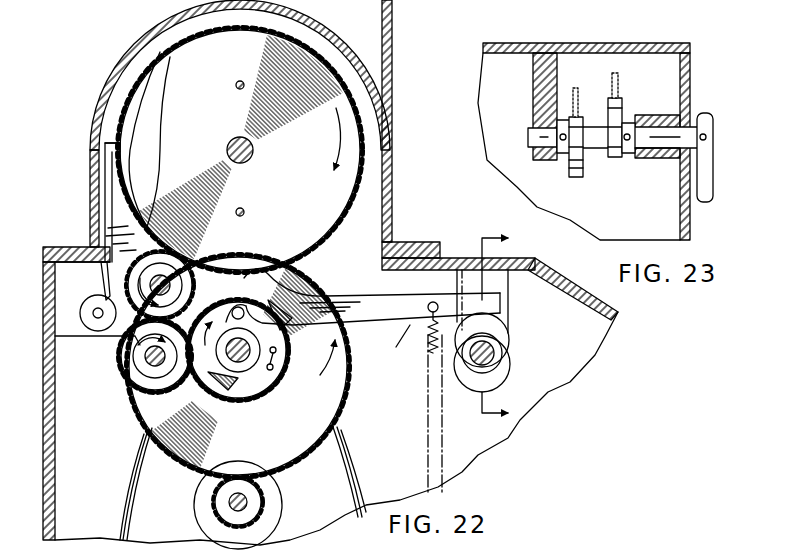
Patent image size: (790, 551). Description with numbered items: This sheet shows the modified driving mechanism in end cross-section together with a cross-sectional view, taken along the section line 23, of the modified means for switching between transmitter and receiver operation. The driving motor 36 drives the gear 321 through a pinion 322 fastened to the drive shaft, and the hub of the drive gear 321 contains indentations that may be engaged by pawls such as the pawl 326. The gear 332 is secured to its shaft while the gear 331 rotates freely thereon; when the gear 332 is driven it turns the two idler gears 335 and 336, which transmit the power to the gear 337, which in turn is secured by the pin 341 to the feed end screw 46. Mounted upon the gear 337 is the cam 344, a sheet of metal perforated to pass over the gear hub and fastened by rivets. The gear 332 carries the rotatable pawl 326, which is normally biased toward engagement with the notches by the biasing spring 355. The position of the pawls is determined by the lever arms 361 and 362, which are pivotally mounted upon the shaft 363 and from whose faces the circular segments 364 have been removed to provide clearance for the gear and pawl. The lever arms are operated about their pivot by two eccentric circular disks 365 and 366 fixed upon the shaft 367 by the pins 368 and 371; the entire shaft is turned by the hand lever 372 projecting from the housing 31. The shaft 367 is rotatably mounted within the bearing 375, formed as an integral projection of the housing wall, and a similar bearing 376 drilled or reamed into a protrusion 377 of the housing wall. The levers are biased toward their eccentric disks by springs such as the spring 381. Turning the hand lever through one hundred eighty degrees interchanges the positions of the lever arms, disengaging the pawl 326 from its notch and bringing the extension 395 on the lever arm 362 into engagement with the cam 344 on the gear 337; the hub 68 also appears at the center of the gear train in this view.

In FIG. 23, the housing 31 is at (690, 50).
In FIG. 22, the driving motor 36 is at (362, 486).
In FIG. 22, the feed end screw 46 is at (254, 150).
In FIG. 22, the hub shaft 68 is at (240, 362).
In FIG. 22, the section line 23- 23 is at (504, 332).
In FIG. 22, the drive gear 321 is at (350, 393).
In FIG. 22, the pinion 322 is at (284, 489).
In FIG. 22, the pawl 326 is at (372, 297).
In FIG. 22, the gear 331 is at (236, 84).
In FIG. 22, the gear 332 is at (283, 382).
In FIG. 22, the idler gear 335 is at (128, 360).
In FIG. 22, the idler gear 336 is at (128, 284).
In FIG. 22, the gear 337 is at (248, 54).
In FIG. 22, the pin 341 is at (328, 270).
In FIG. 22, the cam 344 is at (148, 104).
In FIG. 22, the biasing spring 355 is at (282, 353).
In FIG. 22, the lever arm 361 is at (424, 330).
In FIG. 23, the lever arm 361 is at (576, 88).
In FIG. 22, the lever arm 362 is at (470, 310).
In FIG. 23, the lever arm 362 is at (615, 74).
In FIG. 22, the shaft 363 is at (250, 312).
In FIG. 22, the circular segments 364 is at (218, 298).
In FIG. 22, the eccentric circular disk 365 is at (500, 330).
In FIG. 23, the eccentric circular disk 365 is at (618, 100).
In FIG. 22, the eccentric circular disk 366 is at (510, 372).
In FIG. 23, the eccentric circular disk 366 is at (571, 162).
In FIG. 22, the shaft 367 is at (495, 350).
In FIG. 23, the shaft 367 is at (658, 110).
In FIG. 23, the pin 368 is at (627, 154).
In FIG. 23, the pin 371 is at (560, 132).
In FIG. 23, the hand lever 372 is at (713, 192).
In FIG. 23, the bearing 375 is at (660, 158).
In FIG. 23, the bearing 376 is at (530, 135).
In FIG. 22, the protrusion 377 is at (504, 291).
In FIG. 23, the protrusion 377 is at (535, 82).
In FIG. 22, the spring 381 is at (430, 343).
In FIG. 22, the extension 395 is at (130, 145).